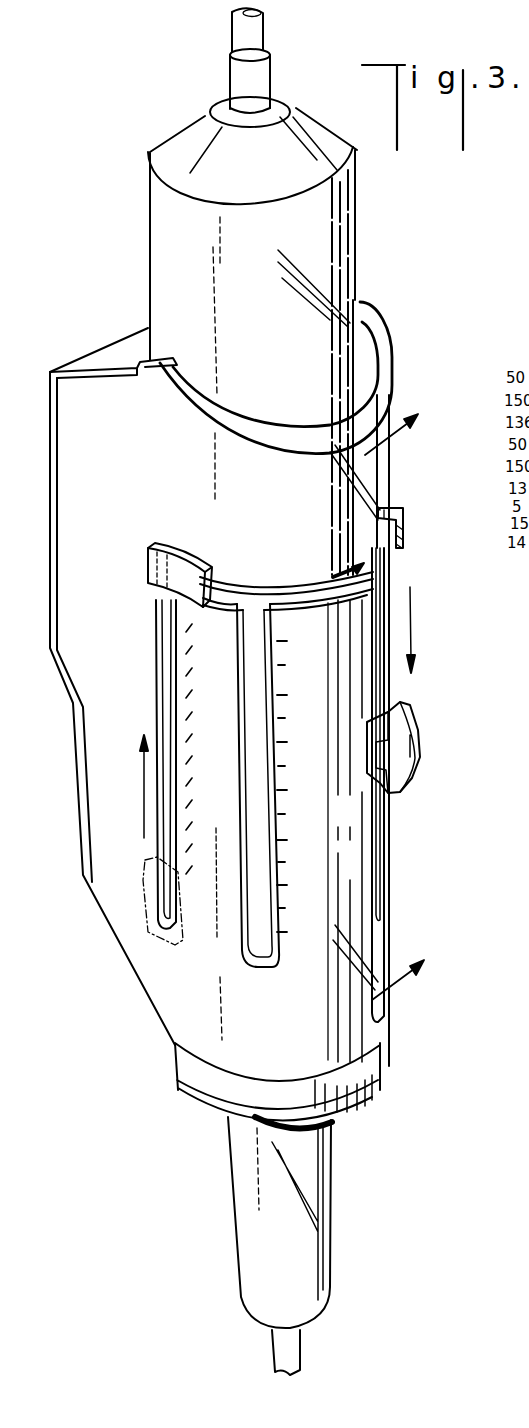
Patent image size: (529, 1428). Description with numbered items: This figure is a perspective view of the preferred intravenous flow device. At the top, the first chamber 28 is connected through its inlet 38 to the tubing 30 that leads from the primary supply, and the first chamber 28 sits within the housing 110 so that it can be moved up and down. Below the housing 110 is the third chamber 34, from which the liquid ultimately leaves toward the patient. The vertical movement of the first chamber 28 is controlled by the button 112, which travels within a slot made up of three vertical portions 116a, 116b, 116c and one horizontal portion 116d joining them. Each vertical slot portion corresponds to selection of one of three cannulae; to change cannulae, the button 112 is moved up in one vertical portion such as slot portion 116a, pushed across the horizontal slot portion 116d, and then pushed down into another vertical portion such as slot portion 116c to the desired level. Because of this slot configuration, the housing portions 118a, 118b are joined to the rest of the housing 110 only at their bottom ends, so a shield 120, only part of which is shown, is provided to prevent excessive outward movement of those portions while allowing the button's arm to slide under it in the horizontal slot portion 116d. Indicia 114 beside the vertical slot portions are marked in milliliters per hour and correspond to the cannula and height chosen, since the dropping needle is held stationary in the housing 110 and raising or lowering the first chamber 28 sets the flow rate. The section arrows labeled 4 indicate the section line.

The section line 4- 4 is at (404, 699).
The first chamber 28 is at (160, 225).
The tubing 30 is at (247, 48).
The third chamber 34 is at (252, 1187).
The inlet 38 is at (240, 89).
The housing 110 is at (355, 834).
The button 112 is at (420, 752).
The indicia 114 is at (278, 866).
The slot portion 116a is at (156, 637).
The slot portion 116b is at (250, 940).
The slot portion 116c is at (385, 900).
The slot portion 116d is at (298, 580).
The housing portion 118a is at (233, 822).
The housing portion 118b is at (360, 822).
The shield 120 is at (147, 565).